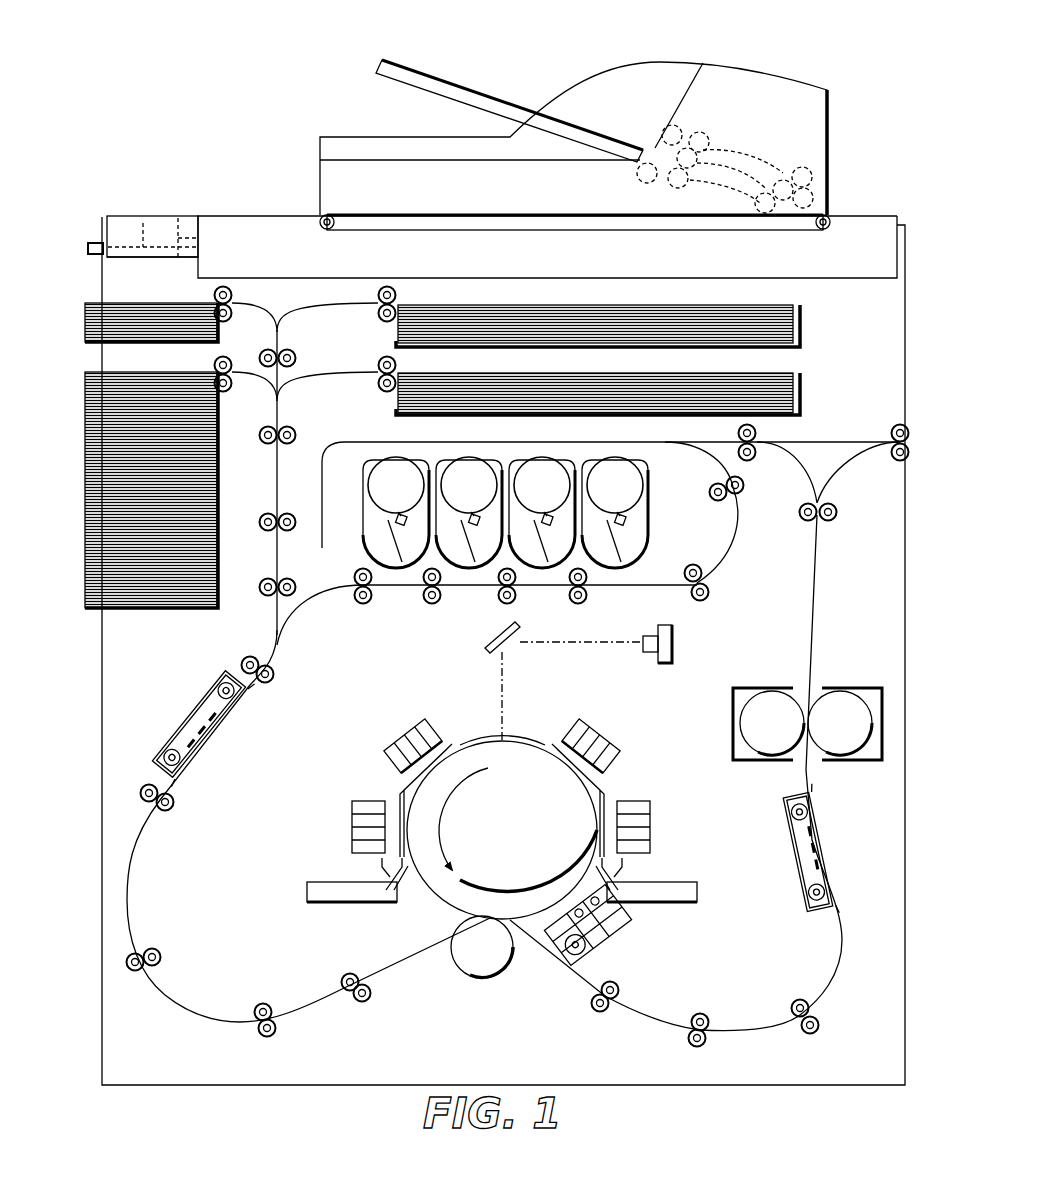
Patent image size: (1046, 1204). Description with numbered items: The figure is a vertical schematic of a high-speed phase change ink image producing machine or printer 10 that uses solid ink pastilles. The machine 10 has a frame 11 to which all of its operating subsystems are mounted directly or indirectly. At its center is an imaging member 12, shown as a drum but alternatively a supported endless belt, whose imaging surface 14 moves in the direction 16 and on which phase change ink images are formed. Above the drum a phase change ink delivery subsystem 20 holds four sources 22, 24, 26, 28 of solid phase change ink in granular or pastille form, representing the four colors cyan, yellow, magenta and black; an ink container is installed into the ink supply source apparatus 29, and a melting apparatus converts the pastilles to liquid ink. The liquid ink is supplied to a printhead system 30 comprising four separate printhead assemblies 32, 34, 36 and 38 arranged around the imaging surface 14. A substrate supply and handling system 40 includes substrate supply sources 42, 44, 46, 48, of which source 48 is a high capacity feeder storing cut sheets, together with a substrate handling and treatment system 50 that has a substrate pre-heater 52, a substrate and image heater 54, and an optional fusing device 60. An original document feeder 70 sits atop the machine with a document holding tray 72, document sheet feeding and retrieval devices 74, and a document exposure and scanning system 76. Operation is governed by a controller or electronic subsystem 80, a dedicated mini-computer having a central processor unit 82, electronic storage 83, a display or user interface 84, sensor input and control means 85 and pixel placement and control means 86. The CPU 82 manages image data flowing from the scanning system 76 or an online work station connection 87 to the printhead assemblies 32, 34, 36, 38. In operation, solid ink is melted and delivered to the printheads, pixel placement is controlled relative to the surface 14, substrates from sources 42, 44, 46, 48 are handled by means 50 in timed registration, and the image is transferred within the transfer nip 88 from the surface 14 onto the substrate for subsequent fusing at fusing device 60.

The phase change ink image producing machine 10 is at (248, 76).
The frame 11 is at (102, 737).
The imaging member 12 is at (483, 740).
The imaging surface 14 is at (520, 741).
The direction 16 is at (436, 845).
The phase change ink delivery subsystem 20 is at (502, 462).
The source 22 is at (386, 461).
The source 24 is at (460, 461).
The source 26 is at (530, 461).
The source 28 is at (606, 461).
The ink supply source apparatus 29 is at (395, 570).
The printhead system 30 is at (501, 796).
The printhead assembly 32 is at (412, 730).
The printhead assembly 34 is at (352, 833).
The printhead assembly 36 is at (604, 734).
The printhead assembly 38 is at (650, 833).
The substrate supply and handling system 40 is at (183, 1020).
The substrate supply source 42 is at (802, 335).
The substrate supply source 44 is at (802, 402).
The substrate supply source 46 is at (192, 345).
The substrate supply source 48 is at (150, 611).
The substrate handling and treatment system 50 is at (270, 483).
The substrate pre-heater 52 is at (183, 720).
The substrate and image heater 54 is at (789, 846).
The fusing device 60 is at (752, 688).
The original document feeder 70 is at (387, 134).
The document holding tray 72 is at (420, 70).
The document sheet feeding and retrieval devices 74 is at (740, 158).
The document exposure and scanning system 76 is at (570, 229).
The controller 80 is at (155, 233).
The central processor unit 82 is at (131, 224).
The electronic storage 83 is at (120, 254).
The user interface 84 is at (157, 217).
The sensor input and control means 85 is at (197, 223).
The pixel placement and control means 86 is at (187, 242).
The work station connection 87 is at (103, 243).
The transfer nip 88 is at (452, 942).